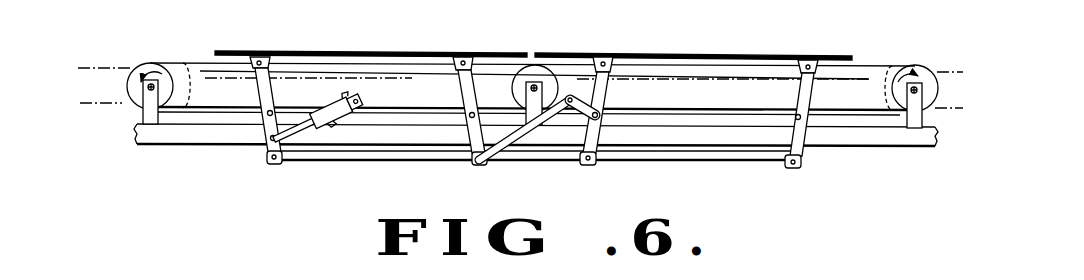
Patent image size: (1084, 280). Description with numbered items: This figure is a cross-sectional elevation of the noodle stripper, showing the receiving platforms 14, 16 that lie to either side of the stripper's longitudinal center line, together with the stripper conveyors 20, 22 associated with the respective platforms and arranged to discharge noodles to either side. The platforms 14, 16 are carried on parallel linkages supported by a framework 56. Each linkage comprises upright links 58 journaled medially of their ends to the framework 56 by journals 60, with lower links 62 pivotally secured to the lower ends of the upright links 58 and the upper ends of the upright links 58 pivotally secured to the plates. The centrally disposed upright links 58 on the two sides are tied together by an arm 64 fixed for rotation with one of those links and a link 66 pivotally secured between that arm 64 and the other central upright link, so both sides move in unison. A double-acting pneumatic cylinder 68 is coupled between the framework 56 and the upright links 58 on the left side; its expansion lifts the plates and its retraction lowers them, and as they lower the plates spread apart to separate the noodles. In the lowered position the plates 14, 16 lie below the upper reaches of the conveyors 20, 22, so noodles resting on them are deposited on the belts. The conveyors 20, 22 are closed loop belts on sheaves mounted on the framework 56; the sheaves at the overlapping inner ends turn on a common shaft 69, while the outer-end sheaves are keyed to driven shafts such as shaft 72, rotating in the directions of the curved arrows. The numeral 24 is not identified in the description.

The receiving platform 14 is at (199, 77).
The receiving platform 16 is at (695, 53).
The stripper conveyor 20 is at (185, 62).
The stripper conveyor 22 is at (898, 65).
The roller axis 24 is at (102, 67).
The framework 56 is at (176, 134).
The upright link 58 is at (256, 91).
The journal 60 is at (258, 117).
The lower link 62 is at (350, 157).
The arm 64 is at (576, 110).
The link 66 is at (498, 147).
The double-acting pneumatic cylinder 68 is at (324, 101).
The common shaft 69 is at (535, 84).
The shaft 72 is at (147, 88).